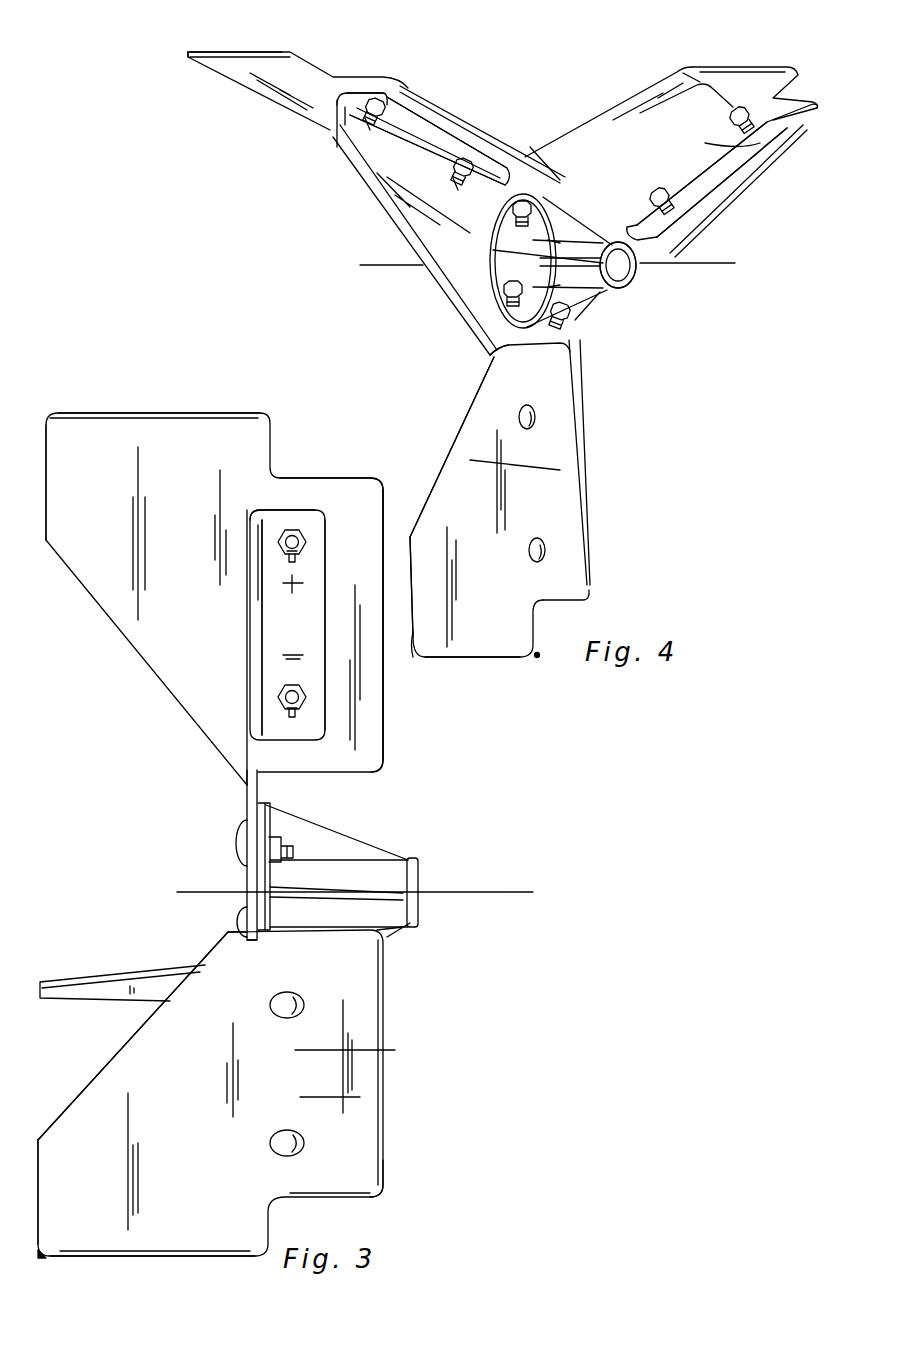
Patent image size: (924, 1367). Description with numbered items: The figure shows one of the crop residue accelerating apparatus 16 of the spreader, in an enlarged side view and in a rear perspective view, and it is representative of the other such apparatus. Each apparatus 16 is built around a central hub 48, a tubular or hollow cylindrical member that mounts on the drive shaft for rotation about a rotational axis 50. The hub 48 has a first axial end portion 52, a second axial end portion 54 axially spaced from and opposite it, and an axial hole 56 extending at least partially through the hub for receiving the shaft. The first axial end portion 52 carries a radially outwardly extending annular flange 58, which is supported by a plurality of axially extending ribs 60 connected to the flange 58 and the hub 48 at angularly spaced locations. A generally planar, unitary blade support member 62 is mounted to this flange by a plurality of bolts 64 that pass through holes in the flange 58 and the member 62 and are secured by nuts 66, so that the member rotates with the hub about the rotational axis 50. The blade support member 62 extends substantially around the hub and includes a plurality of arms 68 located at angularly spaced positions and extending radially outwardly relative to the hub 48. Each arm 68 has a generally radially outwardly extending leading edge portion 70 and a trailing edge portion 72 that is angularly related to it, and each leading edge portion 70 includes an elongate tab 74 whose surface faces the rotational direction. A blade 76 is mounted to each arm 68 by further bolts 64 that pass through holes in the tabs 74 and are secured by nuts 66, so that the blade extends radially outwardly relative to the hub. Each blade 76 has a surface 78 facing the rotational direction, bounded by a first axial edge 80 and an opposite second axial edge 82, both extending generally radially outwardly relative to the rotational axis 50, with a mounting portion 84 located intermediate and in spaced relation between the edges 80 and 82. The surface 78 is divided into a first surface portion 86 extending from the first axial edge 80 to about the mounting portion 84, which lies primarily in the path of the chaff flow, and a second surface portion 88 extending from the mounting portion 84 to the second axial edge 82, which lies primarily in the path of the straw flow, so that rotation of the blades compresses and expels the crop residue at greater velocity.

In FIG. 4, the crop residue accelerating apparatus 16 is at (537, 656).
In FIG. 3, the crop residue accelerating apparatus 16 is at (42, 1256).
In FIG. 4, the central hub 48 is at (615, 285).
In FIG. 3, the central hub 48 is at (410, 933).
In FIG. 4, the rotational axis 50 is at (735, 263).
In FIG. 3, the rotational axis 50 is at (513, 888).
In FIG. 4, the first axial end portion 52 is at (467, 317).
In FIG. 3, the first axial end portion 52 is at (247, 802).
In FIG. 4, the second axial end portion 54 is at (667, 237).
In FIG. 3, the second axial end portion 54 is at (413, 860).
In FIG. 4, the axial hole 56 is at (632, 275).
In FIG. 4, the annular flange 58 is at (490, 240).
In FIG. 3, the annular flange 58 is at (265, 803).
In FIG. 4, the ribs 60 is at (507, 227).
In FIG. 3, the ribs 60 is at (350, 833).
In FIG. 4, the blade support member 62 is at (483, 347).
In FIG. 3, the blade support member 62 is at (248, 903).
In FIG. 4, the bolts 64 is at (377, 133).
In FIG. 3, the bolts 64 is at (290, 550).
In FIG. 4, the nuts 66 is at (383, 105).
In FIG. 3, the nuts 66 is at (297, 533).
In FIG. 4, the arms 68 is at (620, 110).
In FIG. 3, the arms 68 is at (257, 510).
In FIG. 4, the leading edge portion 70 is at (340, 125).
In FIG. 3, the leading edge portion 70 is at (277, 510).
In FIG. 4, the trailing edge portion 72 is at (433, 270).
In FIG. 4, the elongate tab 74 is at (440, 90).
In FIG. 3, the elongate tab 74 is at (327, 560).
In FIG. 4, the blade 76 is at (252, 52).
In FIG. 3, the blade 76 is at (167, 413).
In FIG. 4, the surface 78 is at (222, 70).
In FIG. 3, the surface 78 is at (210, 834).
In FIG. 4, the first axial edge 80 is at (230, 98).
In FIG. 3, the first axial edge 80 is at (46, 530).
In FIG. 4, the second axial edge 82 is at (470, 115).
In FIG. 3, the second axial edge 82 is at (383, 500).
In FIG. 4, the mounting portion 84 is at (360, 90).
In FIG. 3, the mounting portion 84 is at (310, 497).
In FIG. 4, the first surface portion 86 is at (457, 502).
In FIG. 3, the first surface portion 86 is at (120, 1110).
In FIG. 4, the second surface portion 88 is at (562, 553).
In FIG. 3, the second surface portion 88 is at (360, 1097).